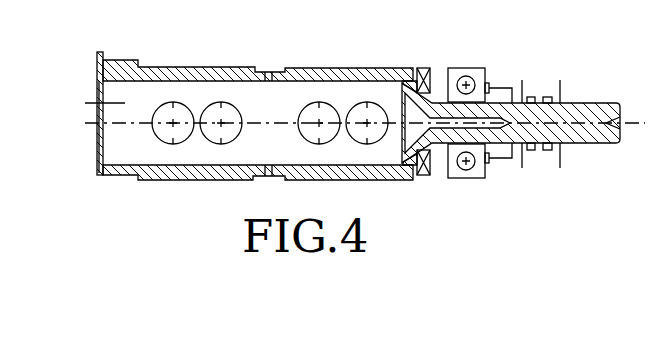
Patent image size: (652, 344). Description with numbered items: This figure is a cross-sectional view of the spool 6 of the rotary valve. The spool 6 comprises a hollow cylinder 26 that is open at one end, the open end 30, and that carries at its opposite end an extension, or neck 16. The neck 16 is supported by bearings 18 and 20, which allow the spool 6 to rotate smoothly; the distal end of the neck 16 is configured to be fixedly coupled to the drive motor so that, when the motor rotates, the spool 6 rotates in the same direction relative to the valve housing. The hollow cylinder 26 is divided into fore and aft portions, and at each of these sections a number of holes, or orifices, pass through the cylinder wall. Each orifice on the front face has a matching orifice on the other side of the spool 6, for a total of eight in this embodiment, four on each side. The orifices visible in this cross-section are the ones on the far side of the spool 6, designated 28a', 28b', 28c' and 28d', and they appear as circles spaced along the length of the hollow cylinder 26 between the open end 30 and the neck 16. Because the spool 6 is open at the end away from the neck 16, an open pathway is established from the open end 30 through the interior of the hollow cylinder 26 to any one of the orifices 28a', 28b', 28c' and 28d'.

The spool 6 is at (251, 148).
The extension neck 16 is at (578, 103).
The bearing 18 is at (424, 178).
The bearing 20 is at (468, 68).
The hollow cylinder 26 is at (160, 180).
The orifice 28a' is at (372, 86).
The orifice 28b' is at (320, 86).
The orifice 28c' is at (226, 86).
The orifice 28d' is at (175, 86).
The open end 30 is at (117, 143).